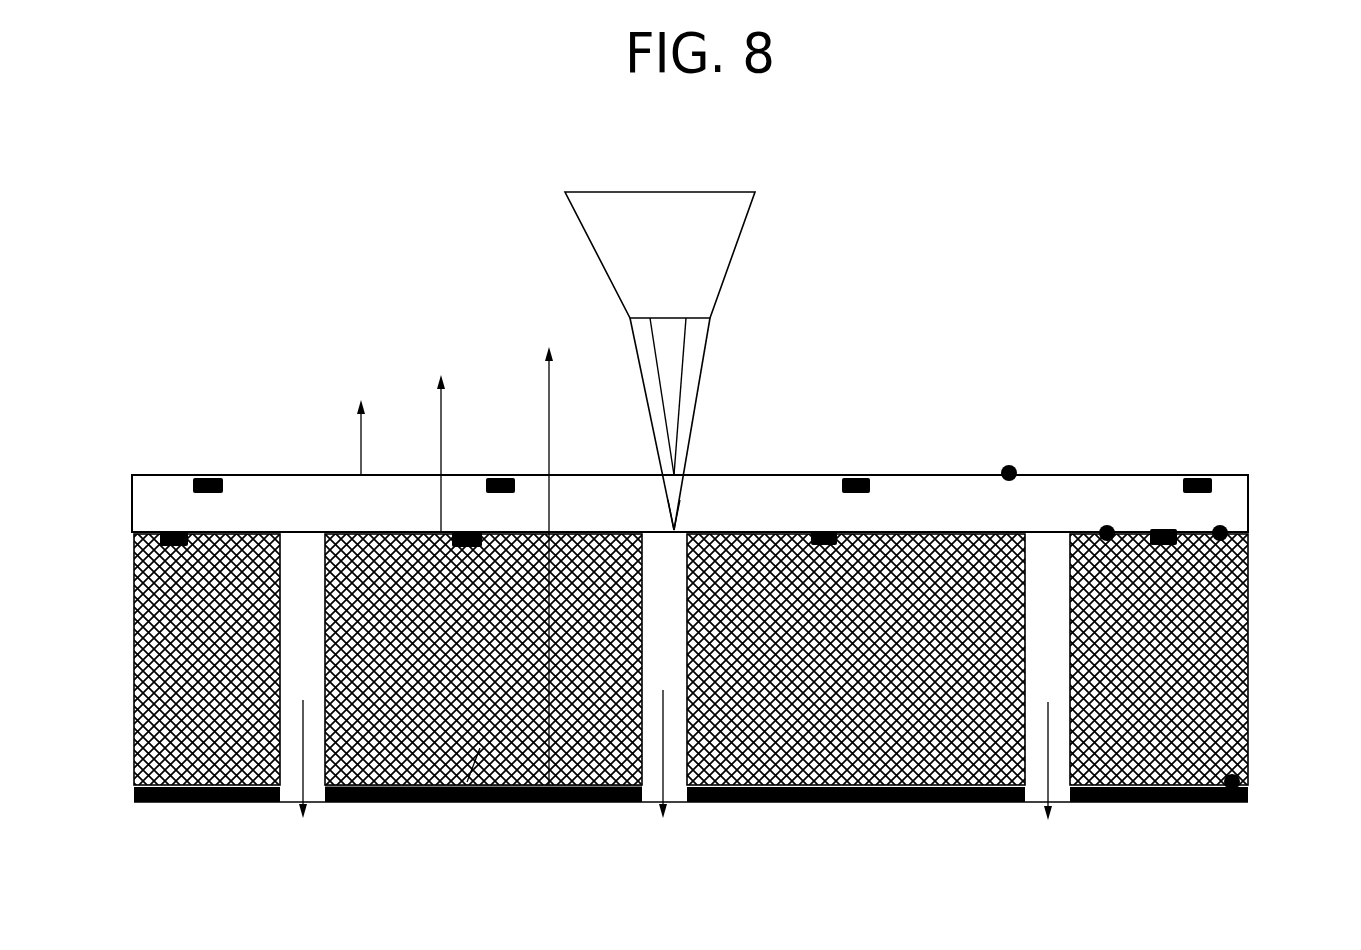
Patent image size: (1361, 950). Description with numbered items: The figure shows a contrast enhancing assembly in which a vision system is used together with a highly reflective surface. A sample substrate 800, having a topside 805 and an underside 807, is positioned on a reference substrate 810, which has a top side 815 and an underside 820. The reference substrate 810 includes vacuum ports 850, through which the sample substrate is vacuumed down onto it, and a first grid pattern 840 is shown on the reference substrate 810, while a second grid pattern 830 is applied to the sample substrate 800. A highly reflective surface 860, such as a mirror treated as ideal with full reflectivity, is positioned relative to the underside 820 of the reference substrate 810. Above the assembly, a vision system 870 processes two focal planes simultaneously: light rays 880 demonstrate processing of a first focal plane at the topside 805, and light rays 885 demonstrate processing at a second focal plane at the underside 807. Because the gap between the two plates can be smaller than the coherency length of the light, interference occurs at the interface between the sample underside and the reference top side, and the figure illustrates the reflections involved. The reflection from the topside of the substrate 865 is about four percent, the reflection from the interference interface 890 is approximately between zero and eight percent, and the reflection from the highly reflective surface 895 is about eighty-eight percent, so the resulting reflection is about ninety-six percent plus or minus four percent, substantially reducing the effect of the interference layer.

The sample substrate 800 is at (285, 475).
The topside 805 is at (1017, 470).
The underside 807 is at (1115, 528).
The reference substrate 810 is at (455, 802).
The top side 815 is at (1248, 545).
The underside 820 is at (1240, 778).
The second grid pattern 830 is at (212, 478).
The first grid pattern 840 is at (163, 543).
The vacuum ports 850 is at (692, 708).
The highly reflective surface 860 is at (543, 803).
The reflection from the topside of the substrate 865 is at (362, 448).
The vision system 870 is at (735, 252).
The light rays 880 is at (680, 402).
The light rays 885 is at (682, 512).
The reflection from the interference interface 890 is at (442, 435).
The reflection from the highly reflective surface 895 is at (550, 407).